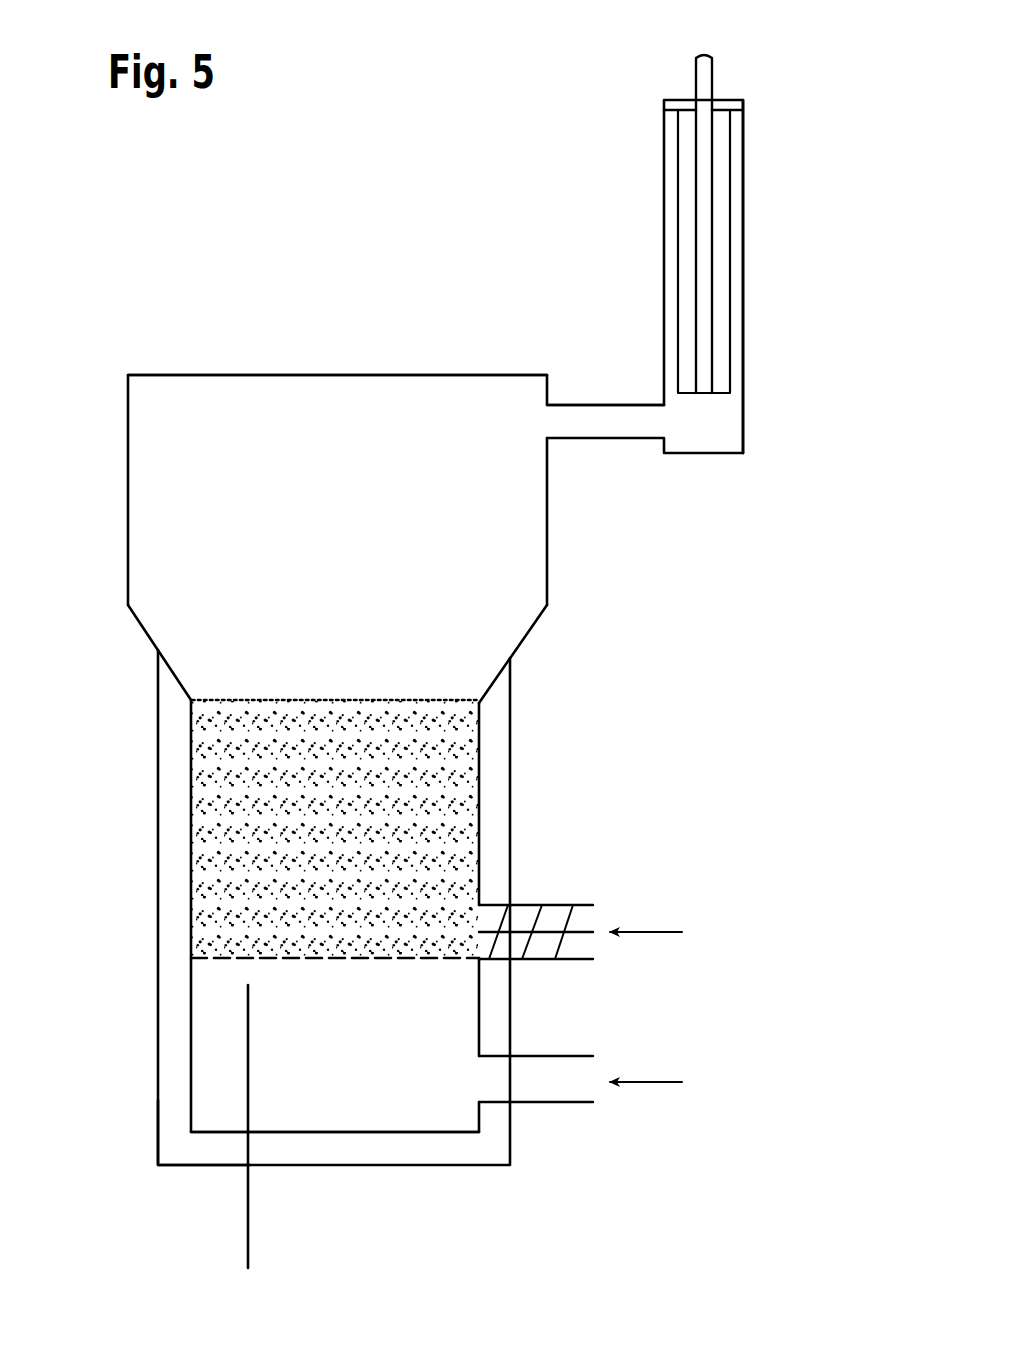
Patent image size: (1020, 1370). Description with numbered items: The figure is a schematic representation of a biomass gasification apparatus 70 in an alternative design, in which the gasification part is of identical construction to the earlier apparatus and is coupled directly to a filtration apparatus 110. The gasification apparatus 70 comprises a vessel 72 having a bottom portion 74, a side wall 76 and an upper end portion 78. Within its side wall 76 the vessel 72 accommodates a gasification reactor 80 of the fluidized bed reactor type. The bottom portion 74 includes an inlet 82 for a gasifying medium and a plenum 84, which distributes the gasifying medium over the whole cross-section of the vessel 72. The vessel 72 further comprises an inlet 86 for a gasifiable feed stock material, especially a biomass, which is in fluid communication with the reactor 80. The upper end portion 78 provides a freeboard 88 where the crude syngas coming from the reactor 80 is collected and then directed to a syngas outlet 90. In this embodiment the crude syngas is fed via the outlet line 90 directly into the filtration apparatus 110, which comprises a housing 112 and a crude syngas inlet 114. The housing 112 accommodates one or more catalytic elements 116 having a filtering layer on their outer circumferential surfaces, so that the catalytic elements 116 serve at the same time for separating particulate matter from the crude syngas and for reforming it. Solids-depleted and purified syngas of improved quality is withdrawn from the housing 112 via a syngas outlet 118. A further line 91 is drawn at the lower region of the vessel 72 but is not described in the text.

The gasification apparatus 70 is at (566, 314).
The vessel 72 is at (144, 651).
The bottom portion 74 is at (150, 1108).
The side wall 76 is at (190, 868).
The upper end portion 78 is at (335, 370).
The gasification reactor 80 is at (350, 843).
The inlet 82 is at (578, 1104).
The plenum 84 is at (350, 1099).
The inlet 86 is at (578, 904).
The freeboard 88 is at (360, 667).
The syngas outlet 90 is at (607, 405).
The discharge tube 91 is at (248, 1235).
The filtration apparatus 110 is at (756, 194).
The housing 112 is at (744, 247).
The crude syngas inlet 114 is at (654, 461).
The catalytic elements 116 is at (688, 143).
The syngas outlet 118 is at (696, 70).